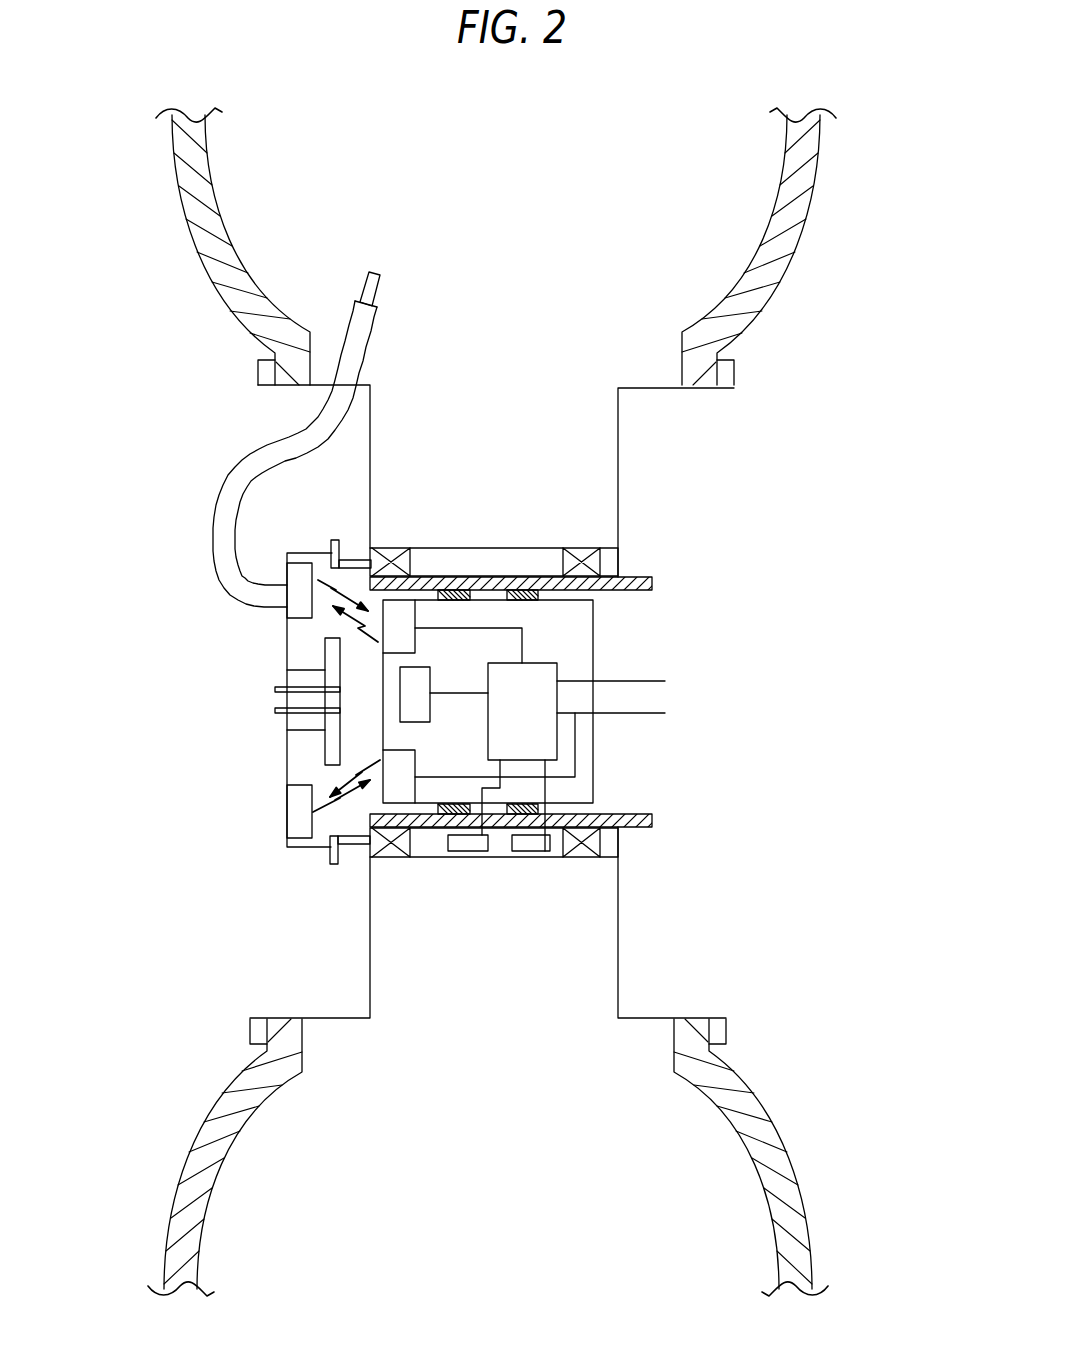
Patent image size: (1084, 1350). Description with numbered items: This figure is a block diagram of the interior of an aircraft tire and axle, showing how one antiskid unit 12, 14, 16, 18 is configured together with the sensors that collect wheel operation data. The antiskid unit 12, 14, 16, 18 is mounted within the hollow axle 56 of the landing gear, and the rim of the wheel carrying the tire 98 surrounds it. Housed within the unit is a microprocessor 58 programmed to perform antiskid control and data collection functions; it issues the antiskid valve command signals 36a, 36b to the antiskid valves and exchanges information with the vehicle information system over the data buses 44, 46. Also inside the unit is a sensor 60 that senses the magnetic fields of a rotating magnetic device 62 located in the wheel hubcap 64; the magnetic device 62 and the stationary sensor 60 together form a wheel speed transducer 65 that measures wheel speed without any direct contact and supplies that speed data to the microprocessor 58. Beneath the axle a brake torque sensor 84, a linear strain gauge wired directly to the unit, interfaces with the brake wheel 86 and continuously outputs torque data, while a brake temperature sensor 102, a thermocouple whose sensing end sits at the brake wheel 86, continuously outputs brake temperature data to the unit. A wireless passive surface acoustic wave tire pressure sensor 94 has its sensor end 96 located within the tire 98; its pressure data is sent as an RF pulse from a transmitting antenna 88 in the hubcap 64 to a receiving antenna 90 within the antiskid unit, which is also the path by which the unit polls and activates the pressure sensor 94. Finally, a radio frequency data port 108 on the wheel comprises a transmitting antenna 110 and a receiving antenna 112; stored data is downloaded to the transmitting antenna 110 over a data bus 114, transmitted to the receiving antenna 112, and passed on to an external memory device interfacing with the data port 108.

The antiskid unit 12 is at (629, 716).
The antiskid unit 14 is at (629, 716).
The antiskid unit 16 is at (629, 716).
The antiskid unit 18 is at (629, 716).
The antiskid valve command signal 36a is at (752, 669).
The antiskid valve command signal 36b is at (640, 670).
The data bus 44 is at (721, 728).
The data bus 46 is at (626, 715).
The axle 56 is at (632, 576).
The microprocessor 58 is at (485, 743).
The sensor 60 is at (433, 680).
The rotating magnetic device 62 is at (322, 652).
The wheel hubcap 64 is at (282, 757).
The wheel speed transducer 65 is at (206, 701).
The brake torque sensor 84 is at (466, 845).
The brake wheel 86 is at (428, 858).
The transmitting antenna 88 is at (297, 597).
The receiving antenna 90 is at (398, 625).
The tire pressure sensor 94 is at (334, 416).
The sensor end 96 is at (378, 306).
The tire 98 is at (182, 215).
The brake temperature sensor 102 is at (538, 845).
The data port 108 is at (226, 732).
The transmitting antenna 110 is at (396, 793).
The receiving antenna 112 is at (300, 815).
The data bus 114 is at (580, 763).